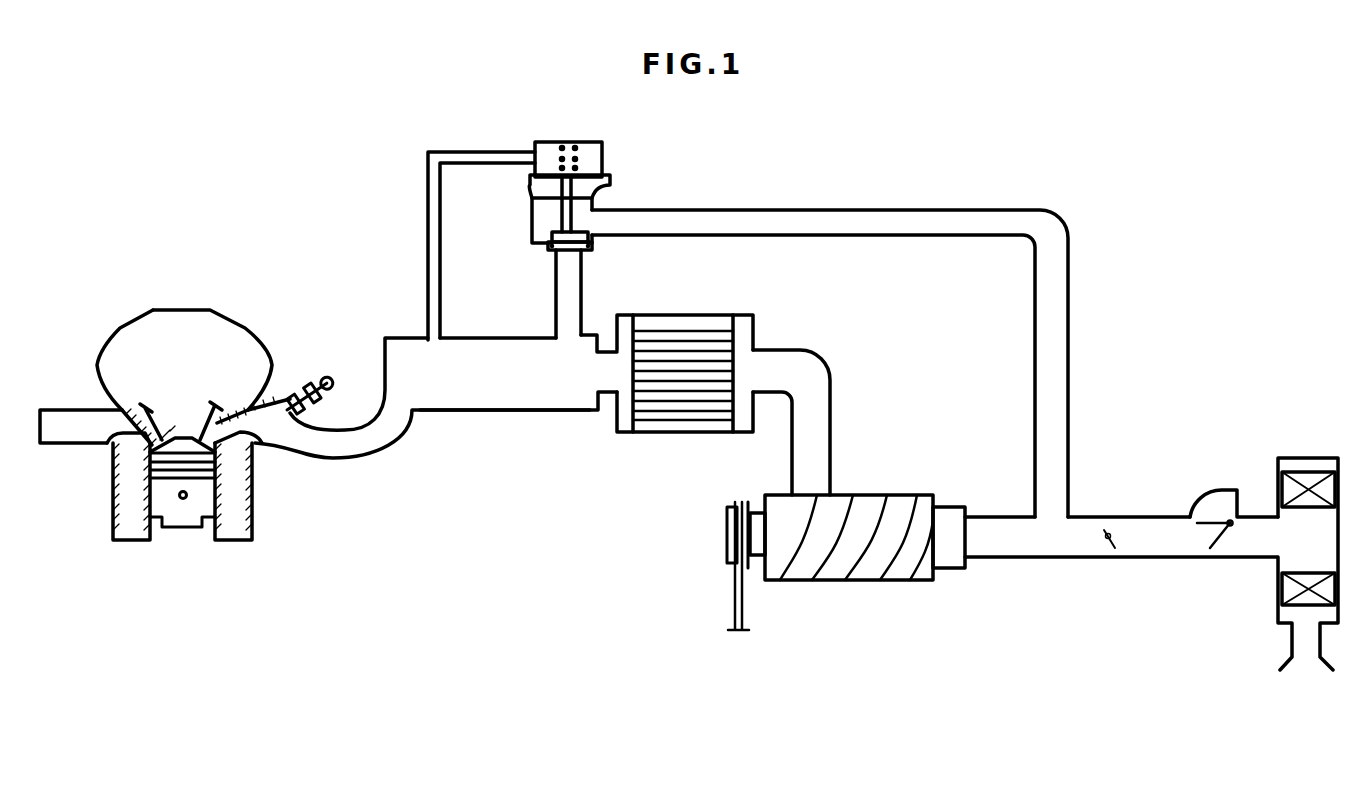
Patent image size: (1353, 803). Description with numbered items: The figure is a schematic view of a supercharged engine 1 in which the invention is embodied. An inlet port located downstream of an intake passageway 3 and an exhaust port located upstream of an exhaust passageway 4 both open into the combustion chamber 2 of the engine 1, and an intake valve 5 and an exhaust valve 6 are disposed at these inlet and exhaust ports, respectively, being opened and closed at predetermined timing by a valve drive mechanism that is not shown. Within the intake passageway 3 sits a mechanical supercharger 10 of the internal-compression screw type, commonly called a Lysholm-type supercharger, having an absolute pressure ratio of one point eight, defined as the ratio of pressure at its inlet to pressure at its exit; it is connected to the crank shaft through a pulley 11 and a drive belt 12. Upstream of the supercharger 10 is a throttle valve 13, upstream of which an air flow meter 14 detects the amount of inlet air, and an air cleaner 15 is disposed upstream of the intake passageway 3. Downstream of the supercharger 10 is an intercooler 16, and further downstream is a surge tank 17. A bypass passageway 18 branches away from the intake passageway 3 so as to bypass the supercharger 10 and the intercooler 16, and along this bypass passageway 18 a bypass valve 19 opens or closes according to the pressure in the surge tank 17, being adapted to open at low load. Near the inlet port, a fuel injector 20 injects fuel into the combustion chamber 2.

The engine 1 is at (100, 518).
The combustion chamber 2 is at (182, 450).
The intake passageway 3 is at (385, 440).
The exhaust passageway 4 is at (62, 408).
The intake valve 5 is at (265, 447).
The exhaust valve 6 is at (102, 447).
The supercharger 10 is at (870, 495).
The pulley 11 is at (727, 537).
The drive belt 12 is at (733, 600).
The throttle valve 13 is at (1104, 530).
The air flow meter 14 is at (1217, 490).
The air cleaner 15 is at (1300, 458).
The intercooler 16 is at (662, 432).
The surge tank 17 is at (498, 412).
The bypass passageway 18 is at (1070, 238).
The bypass valve 19 is at (605, 150).
The fuel injector 20 is at (323, 372).